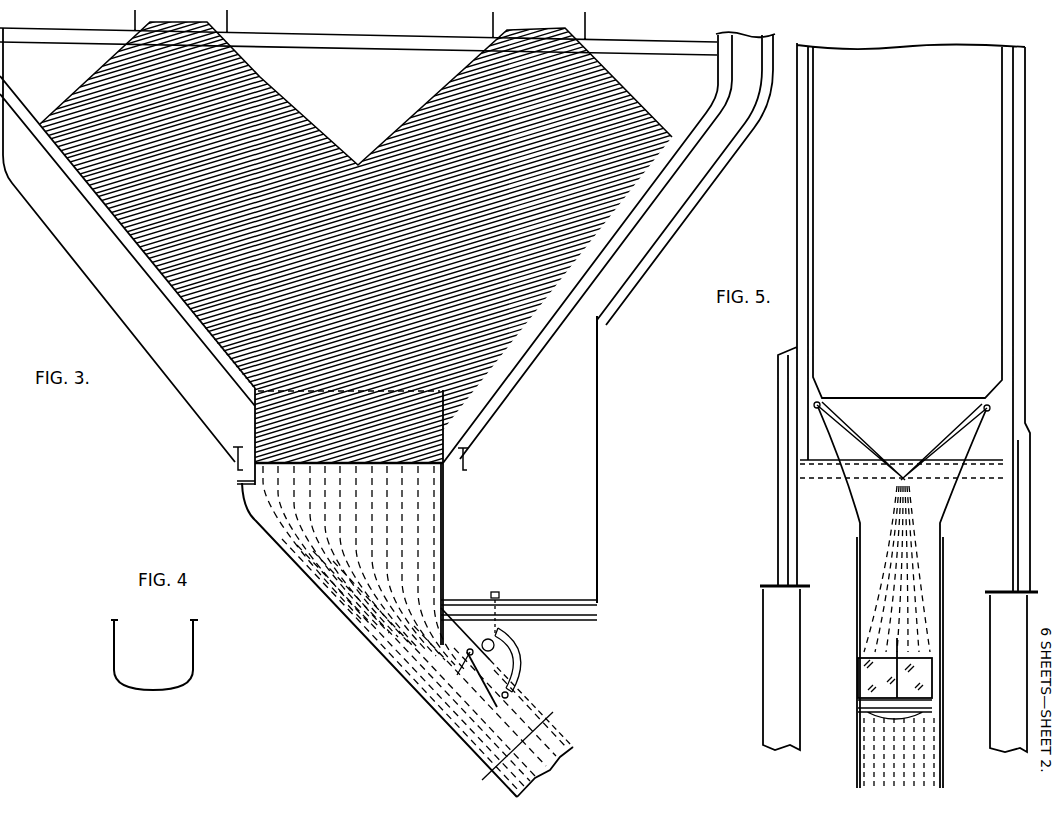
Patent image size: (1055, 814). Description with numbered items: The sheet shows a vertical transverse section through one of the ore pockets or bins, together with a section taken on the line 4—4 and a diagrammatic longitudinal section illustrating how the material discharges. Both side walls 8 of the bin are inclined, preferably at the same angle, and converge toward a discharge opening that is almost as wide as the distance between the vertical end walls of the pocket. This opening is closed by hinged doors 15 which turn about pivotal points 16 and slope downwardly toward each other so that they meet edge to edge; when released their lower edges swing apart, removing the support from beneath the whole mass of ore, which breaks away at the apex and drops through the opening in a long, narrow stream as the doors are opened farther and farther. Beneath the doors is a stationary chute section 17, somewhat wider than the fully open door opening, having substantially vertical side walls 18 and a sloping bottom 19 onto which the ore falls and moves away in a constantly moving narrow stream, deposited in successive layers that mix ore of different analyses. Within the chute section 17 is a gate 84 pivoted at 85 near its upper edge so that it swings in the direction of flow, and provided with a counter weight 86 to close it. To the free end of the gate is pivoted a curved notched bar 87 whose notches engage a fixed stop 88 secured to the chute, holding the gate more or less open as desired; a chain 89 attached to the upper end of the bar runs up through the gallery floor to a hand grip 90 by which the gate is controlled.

In FIG. 3, the section line 4— 4 is at (517, 748).
In FIG. 3, the side walls 8 is at (697, 116).
In FIG. 3, the doors 15 is at (333, 465).
In FIG. 5, the doors 15 is at (947, 434).
In FIG. 5, the pivotal points 16 is at (990, 408).
In FIG. 3, the stationary chute section 17 is at (473, 527).
In FIG. 3, the side walls 18 is at (363, 567).
In FIG. 5, the side walls 18 is at (942, 590).
In FIG. 3, the sloping bottom 19 is at (372, 647).
In FIG. 4, the sloping bottom 19 is at (116, 661).
In FIG. 3, the gate 84 is at (507, 677).
In FIG. 3, the pivot 85 is at (471, 649).
In FIG. 3, the counter weight 86 is at (498, 636).
In FIG. 3, the curved notched bar 87 is at (523, 672).
In FIG. 3, the fixed stop 88 is at (509, 695).
In FIG. 3, the chain 89 is at (500, 626).
In FIG. 3, the hand grip 90 is at (500, 594).